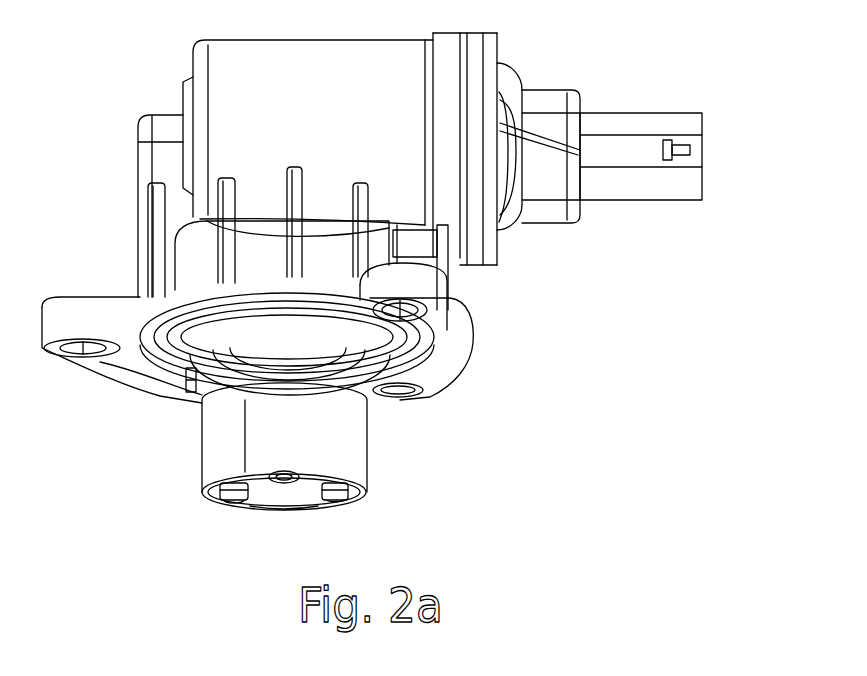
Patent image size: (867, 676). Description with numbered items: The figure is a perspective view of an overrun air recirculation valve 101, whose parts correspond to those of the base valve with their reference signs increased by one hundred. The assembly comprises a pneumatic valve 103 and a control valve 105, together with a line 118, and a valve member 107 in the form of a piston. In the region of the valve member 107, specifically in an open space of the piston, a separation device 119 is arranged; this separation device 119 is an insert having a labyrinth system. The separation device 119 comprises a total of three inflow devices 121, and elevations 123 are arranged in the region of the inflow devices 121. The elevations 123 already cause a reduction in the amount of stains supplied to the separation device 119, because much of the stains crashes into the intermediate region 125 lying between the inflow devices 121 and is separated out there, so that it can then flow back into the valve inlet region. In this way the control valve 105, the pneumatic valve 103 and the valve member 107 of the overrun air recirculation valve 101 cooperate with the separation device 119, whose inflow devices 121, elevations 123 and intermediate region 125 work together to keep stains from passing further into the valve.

The overrun air recirculation valve 101 is at (372, 304).
The pneumatic valve 103 is at (475, 285).
The control valve 105 is at (186, 101).
The valve member 107 is at (222, 430).
The line 118 is at (184, 390).
The separation device 119 is at (283, 504).
The inflow device 121 is at (223, 503).
The elevation 123 is at (210, 498).
The intermediate region 125 is at (288, 490).